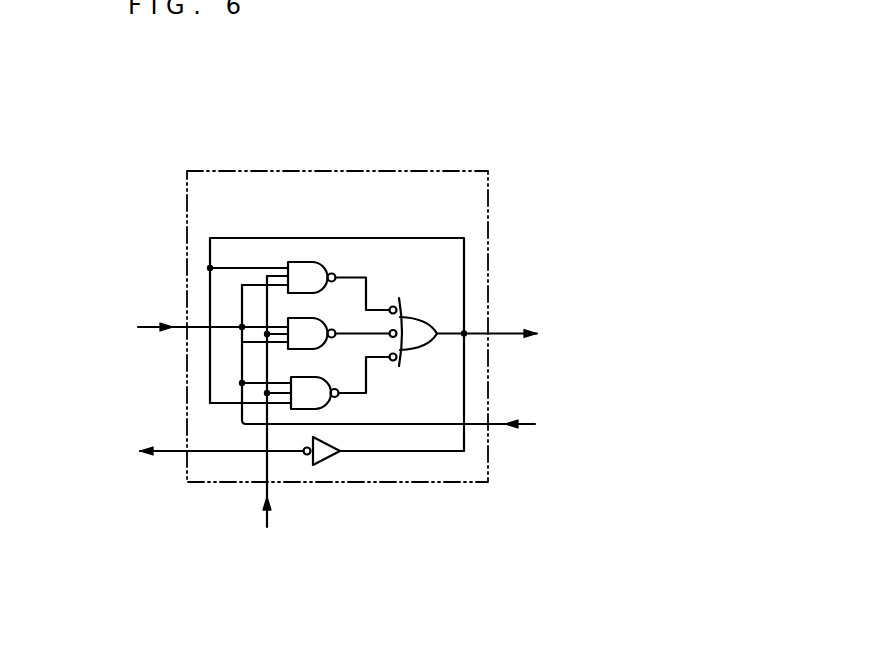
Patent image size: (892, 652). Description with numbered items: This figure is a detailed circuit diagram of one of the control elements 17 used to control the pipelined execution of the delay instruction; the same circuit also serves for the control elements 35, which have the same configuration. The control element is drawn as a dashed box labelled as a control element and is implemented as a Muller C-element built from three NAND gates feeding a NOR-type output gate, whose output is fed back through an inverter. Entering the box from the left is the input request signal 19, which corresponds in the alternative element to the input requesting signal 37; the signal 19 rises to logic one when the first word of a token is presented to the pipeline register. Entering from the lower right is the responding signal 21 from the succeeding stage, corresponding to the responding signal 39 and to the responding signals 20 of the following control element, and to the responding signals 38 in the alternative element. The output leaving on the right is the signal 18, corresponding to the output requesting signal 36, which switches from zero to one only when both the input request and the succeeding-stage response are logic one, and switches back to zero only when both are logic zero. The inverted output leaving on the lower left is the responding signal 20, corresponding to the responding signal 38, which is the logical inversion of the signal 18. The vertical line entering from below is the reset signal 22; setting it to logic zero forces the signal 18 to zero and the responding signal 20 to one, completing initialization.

The control element 17 is at (371, 305).
The signal 18 is at (576, 295).
The input request signal 19 is at (191, 212).
The responding signal 20 is at (212, 514).
The responding signal 21 is at (538, 450).
The reset signal 22 is at (268, 523).
The control element 35 is at (330, 170).
The output requesting signal 36 is at (516, 331).
The input requesting signal 37 is at (150, 327).
The responding signal 38 is at (173, 452).
The responding signal 39 is at (536, 425).